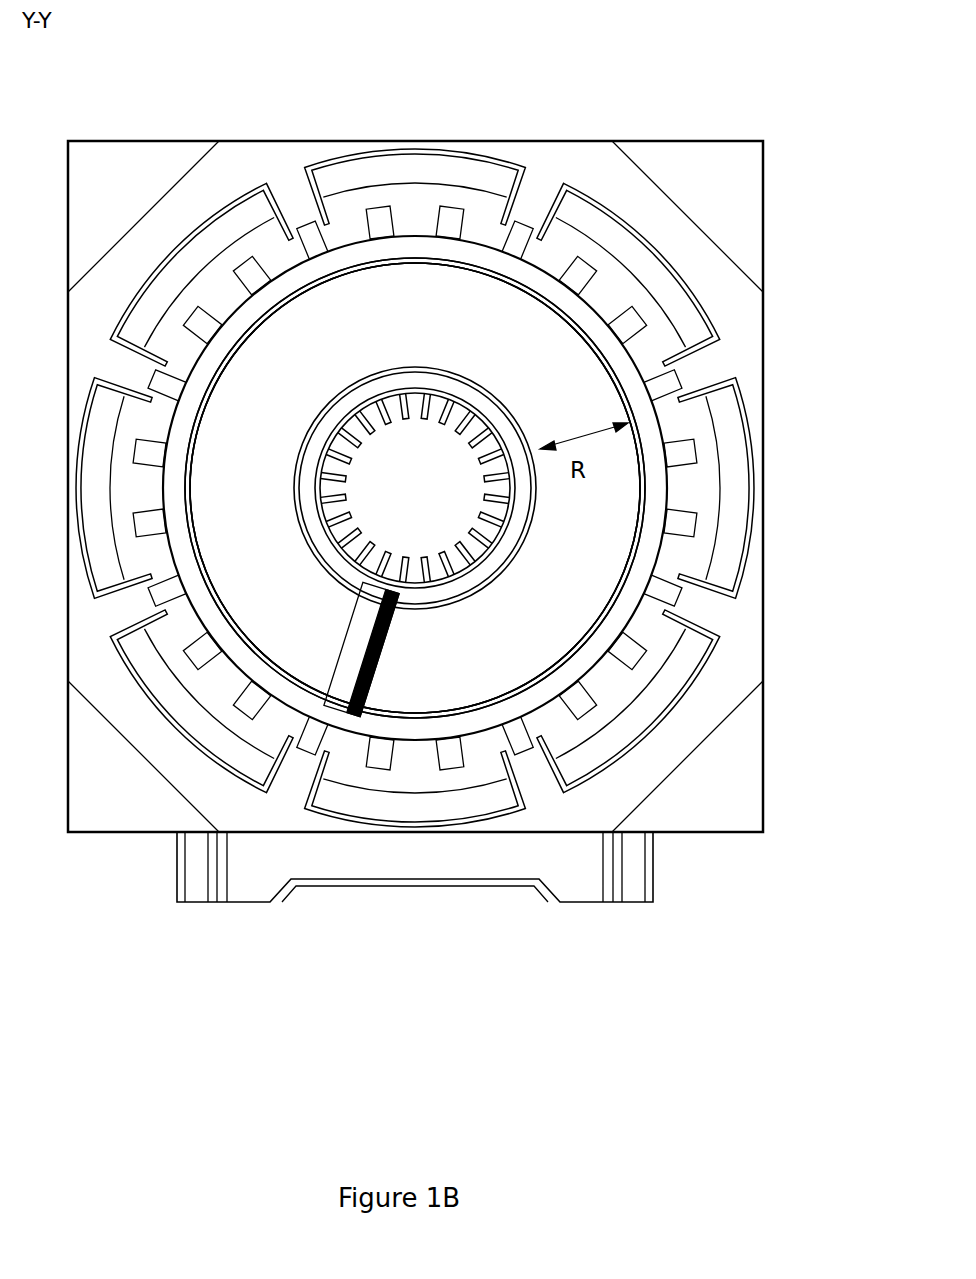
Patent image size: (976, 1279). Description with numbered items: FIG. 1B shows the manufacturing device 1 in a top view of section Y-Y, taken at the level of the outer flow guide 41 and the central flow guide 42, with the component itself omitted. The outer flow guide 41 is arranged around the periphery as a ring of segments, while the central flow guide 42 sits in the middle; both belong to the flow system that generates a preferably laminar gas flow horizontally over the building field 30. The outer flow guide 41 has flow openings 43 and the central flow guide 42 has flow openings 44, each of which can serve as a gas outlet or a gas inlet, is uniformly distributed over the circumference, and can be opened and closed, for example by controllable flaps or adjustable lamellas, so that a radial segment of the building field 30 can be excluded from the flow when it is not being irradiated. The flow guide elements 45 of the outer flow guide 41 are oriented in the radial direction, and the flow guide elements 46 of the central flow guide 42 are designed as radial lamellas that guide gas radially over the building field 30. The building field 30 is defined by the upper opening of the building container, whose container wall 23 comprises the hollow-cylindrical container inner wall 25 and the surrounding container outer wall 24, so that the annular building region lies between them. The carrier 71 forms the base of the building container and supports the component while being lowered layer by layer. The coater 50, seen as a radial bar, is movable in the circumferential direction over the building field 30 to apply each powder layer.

The manufacturing device 1 is at (370, 93).
The container wall 23 is at (468, 617).
The container outer wall 24 is at (472, 707).
The container inner wall 25 is at (492, 579).
The building field 30 is at (588, 559).
The outer flow guide 41 is at (662, 290).
The central flow guide 42 is at (417, 507).
The flow openings 43 is at (601, 300).
The flow openings 44 is at (437, 400).
The flow guide elements 45 is at (577, 272).
The flow guide elements 46 is at (456, 428).
The coater 50 is at (368, 703).
The carrier 71 is at (540, 648).